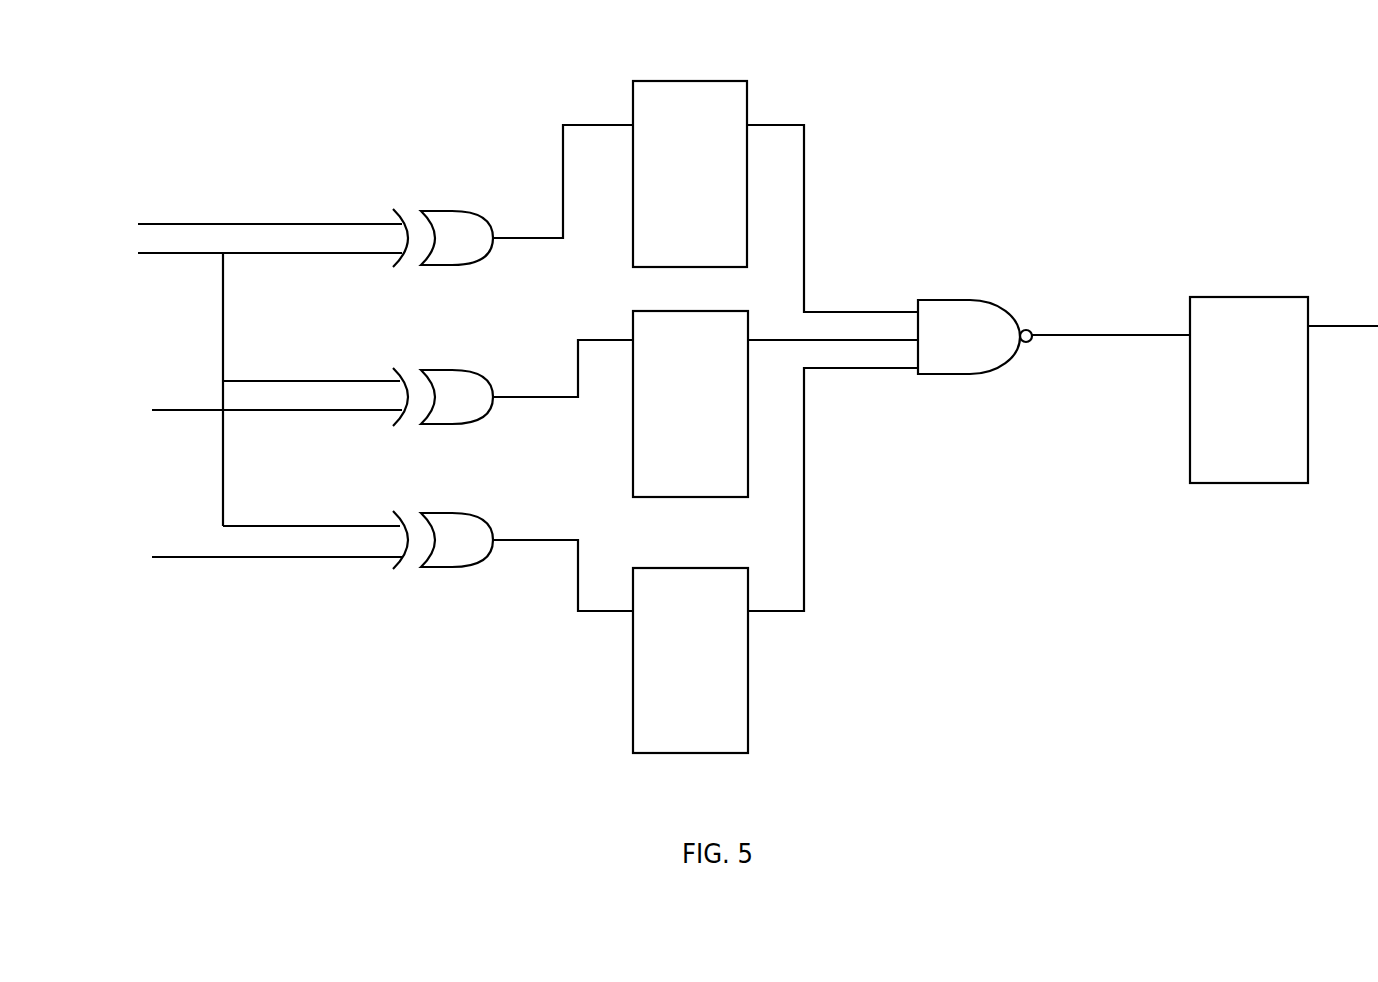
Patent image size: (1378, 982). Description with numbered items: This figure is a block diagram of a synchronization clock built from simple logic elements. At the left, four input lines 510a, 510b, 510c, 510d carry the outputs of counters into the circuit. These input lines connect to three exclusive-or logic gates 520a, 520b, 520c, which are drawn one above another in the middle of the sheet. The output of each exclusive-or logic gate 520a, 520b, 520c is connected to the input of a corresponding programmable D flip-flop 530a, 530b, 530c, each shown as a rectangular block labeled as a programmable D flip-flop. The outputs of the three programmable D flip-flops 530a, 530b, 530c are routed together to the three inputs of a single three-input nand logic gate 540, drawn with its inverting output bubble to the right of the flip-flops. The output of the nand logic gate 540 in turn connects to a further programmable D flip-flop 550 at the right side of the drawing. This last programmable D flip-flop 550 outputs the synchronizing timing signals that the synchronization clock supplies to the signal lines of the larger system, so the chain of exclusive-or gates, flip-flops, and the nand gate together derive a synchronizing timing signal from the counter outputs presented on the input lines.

The input line 510a is at (165, 224).
The input line 510b is at (152, 253).
The input line 510c is at (195, 410).
The input line 510d is at (237, 557).
The exclusive-or logic gate 520a is at (450, 211).
The exclusive-or logic gate 520b is at (478, 342).
The exclusive-or logic gate 520c is at (462, 512).
The programmable D flip-flop 530a is at (678, 81).
The programmable D flip-flop 530b is at (663, 497).
The programmable D flip-flop 530c is at (748, 696).
The nand logic gate 540 is at (975, 382).
The programmable D flip-flop 550 is at (1222, 297).